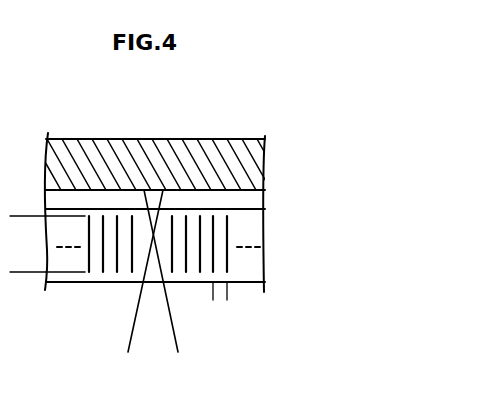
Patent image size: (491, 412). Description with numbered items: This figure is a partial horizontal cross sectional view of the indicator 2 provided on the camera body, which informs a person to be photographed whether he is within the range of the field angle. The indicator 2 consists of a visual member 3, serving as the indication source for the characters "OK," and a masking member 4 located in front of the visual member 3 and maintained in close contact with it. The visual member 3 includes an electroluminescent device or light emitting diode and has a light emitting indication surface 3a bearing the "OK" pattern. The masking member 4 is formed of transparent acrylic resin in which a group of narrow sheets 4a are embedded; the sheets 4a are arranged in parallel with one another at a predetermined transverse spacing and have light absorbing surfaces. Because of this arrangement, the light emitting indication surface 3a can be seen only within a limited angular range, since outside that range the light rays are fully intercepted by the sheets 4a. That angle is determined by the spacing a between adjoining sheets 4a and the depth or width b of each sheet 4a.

The indicator 2 is at (180, 239).
The visual member 3 is at (272, 139).
The light emitting indication surface 3a is at (98, 188).
The masking member 4 is at (272, 210).
The sheets 4a is at (199, 258).
The spacing between adjoining sheets a is at (243, 303).
The depth of each sheet b is at (23, 217).